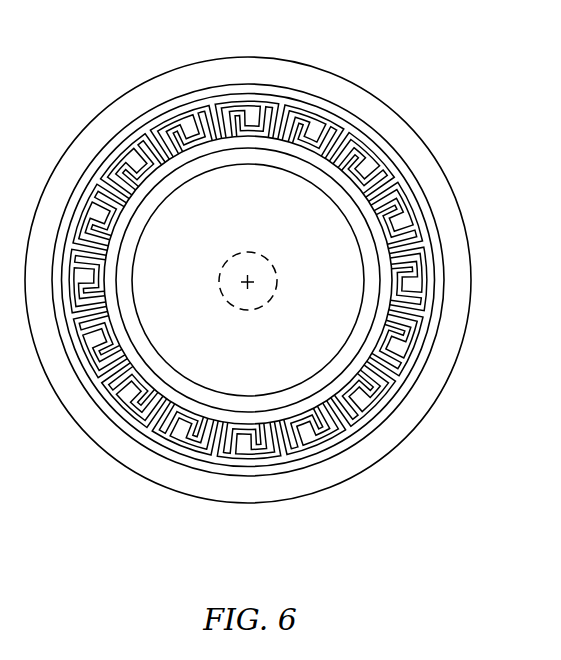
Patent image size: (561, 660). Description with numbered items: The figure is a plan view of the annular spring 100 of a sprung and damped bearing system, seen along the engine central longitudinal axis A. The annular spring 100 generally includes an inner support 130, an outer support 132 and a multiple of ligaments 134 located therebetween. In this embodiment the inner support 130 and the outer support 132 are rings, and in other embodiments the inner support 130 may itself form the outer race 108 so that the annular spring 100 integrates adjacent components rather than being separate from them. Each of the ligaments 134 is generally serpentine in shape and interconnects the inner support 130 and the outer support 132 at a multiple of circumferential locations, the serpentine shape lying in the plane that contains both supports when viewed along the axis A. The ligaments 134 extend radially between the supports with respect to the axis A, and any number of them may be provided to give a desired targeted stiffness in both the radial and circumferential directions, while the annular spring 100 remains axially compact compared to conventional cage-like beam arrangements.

The annular spring 100 is at (378, 158).
The outer support 132 is at (352, 120).
The ligaments 134 is at (385, 172).
The inner support 130 is at (320, 176).
The outer race 108 is at (298, 396).
The engine central longitudinal axis A is at (248, 283).